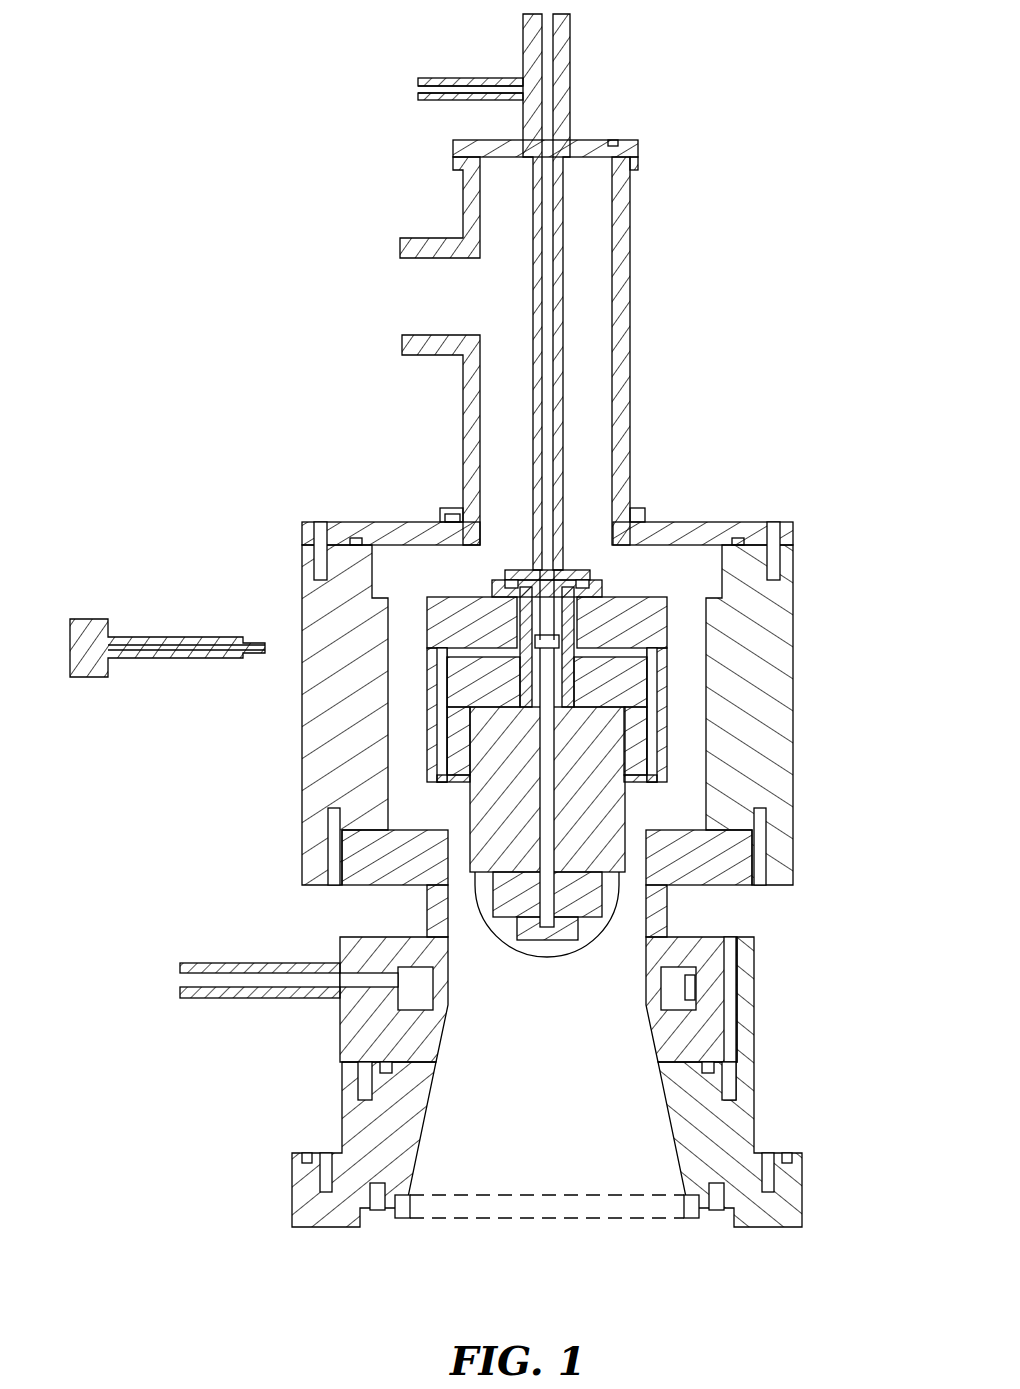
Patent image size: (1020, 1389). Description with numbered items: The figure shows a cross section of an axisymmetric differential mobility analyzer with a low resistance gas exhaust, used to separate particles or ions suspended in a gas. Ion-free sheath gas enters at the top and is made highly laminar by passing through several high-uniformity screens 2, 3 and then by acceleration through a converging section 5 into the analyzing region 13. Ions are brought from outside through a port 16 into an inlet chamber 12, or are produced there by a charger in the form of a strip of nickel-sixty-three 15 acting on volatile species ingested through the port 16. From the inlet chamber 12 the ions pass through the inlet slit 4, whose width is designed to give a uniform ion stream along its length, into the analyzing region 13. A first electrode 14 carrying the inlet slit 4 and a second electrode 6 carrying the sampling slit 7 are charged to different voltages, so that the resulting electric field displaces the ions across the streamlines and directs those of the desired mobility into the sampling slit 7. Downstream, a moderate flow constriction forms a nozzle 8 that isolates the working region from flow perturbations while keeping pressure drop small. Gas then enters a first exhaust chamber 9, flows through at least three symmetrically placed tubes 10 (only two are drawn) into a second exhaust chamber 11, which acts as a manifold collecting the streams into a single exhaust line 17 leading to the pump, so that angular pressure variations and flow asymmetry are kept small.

The screen 2 is at (560, 1220).
The screen 3 is at (543, 1193).
The inlet slit 4 is at (452, 963).
The converging section 5 is at (425, 1115).
The second electrode 6 is at (570, 958).
The sampling slit 7 is at (616, 870).
The nozzle 8 is at (463, 860).
The first exhaust chamber 9 is at (396, 874).
The tubes 10 is at (422, 713).
The second exhaust chamber 11 is at (453, 581).
The inlet chamber 12 is at (425, 987).
The analyzing region 13 is at (482, 961).
The first electrode 14 is at (650, 960).
The strip of 63Ni 15 is at (705, 1000).
The port 16 is at (190, 963).
The exhaust line 17 is at (427, 358).